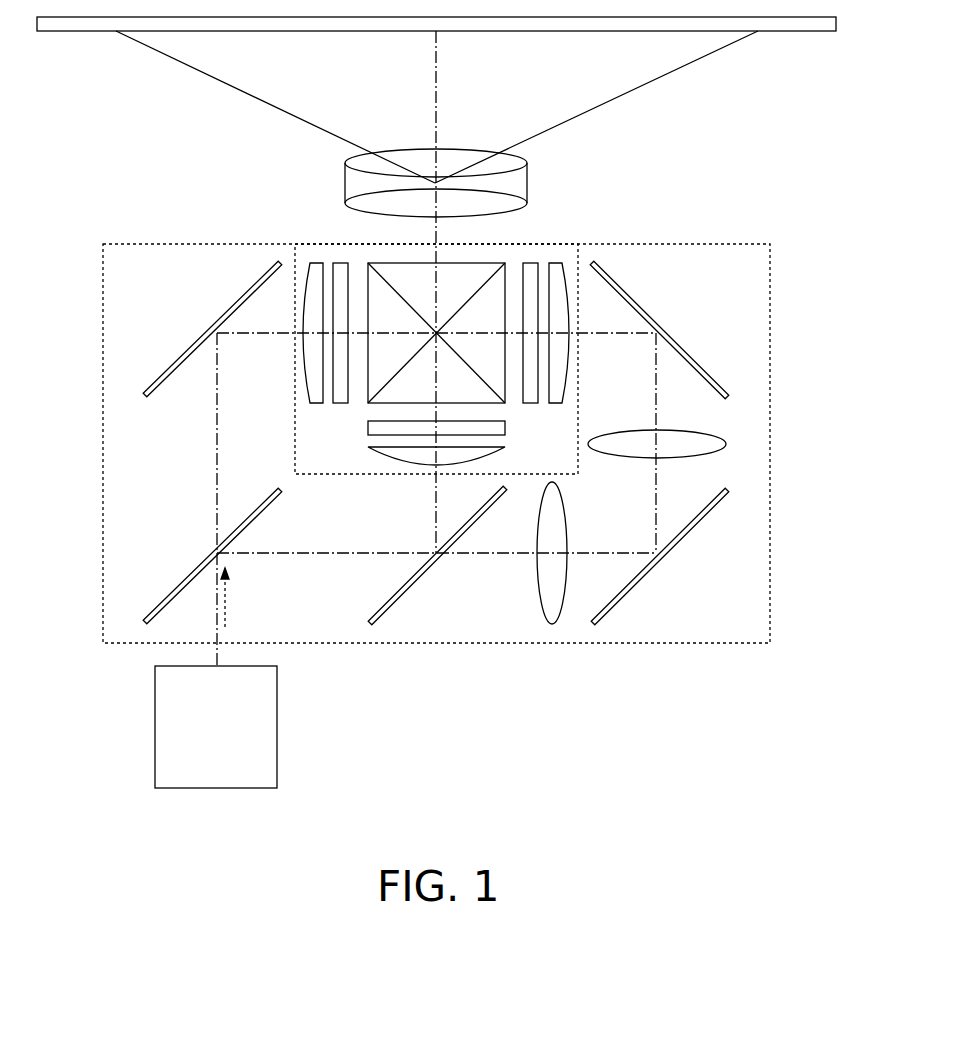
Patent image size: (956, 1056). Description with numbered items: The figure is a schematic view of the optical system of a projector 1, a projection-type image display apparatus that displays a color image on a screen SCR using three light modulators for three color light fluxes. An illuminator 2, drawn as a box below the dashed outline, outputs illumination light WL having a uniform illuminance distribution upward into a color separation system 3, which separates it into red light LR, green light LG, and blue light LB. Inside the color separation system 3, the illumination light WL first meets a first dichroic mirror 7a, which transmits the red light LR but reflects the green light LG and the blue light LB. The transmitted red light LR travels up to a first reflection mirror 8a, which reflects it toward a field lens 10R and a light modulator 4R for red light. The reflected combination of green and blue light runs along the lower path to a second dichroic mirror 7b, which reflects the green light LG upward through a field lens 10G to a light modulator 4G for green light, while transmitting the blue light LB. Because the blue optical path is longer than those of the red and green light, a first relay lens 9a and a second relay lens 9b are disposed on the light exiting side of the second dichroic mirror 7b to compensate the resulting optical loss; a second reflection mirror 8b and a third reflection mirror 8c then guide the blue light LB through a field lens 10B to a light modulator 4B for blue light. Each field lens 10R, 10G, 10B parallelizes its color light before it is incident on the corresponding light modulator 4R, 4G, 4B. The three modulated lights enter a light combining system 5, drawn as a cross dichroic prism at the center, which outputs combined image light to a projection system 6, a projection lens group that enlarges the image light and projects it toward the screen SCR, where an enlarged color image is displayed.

The projector 1 is at (780, 218).
The illuminator 2 is at (278, 725).
The color separation system 3 is at (102, 388).
The light modulator for red light 4R is at (340, 262).
The light modulator for green light 4G is at (370, 428).
The light modulator for blue light 4B is at (531, 262).
The light combining system 5 is at (458, 272).
The projection system 6 is at (417, 160).
The first dichroic mirror 7a is at (180, 585).
The second dichroic mirror 7b is at (415, 590).
The first reflection mirror 8a is at (190, 345).
The second reflection mirror 8b is at (683, 538).
The third reflection mirror 8c is at (685, 347).
The first relay lens 9a is at (537, 575).
The second relay lens 9b is at (713, 433).
The field lens 10R is at (312, 263).
The field lens 10G is at (370, 452).
The field lens 10B is at (559, 263).
The screen SCR is at (800, 32).
The red light LR is at (217, 465).
The green light LG is at (436, 512).
The blue light LB is at (656, 500).
The illumination light WL is at (225, 600).